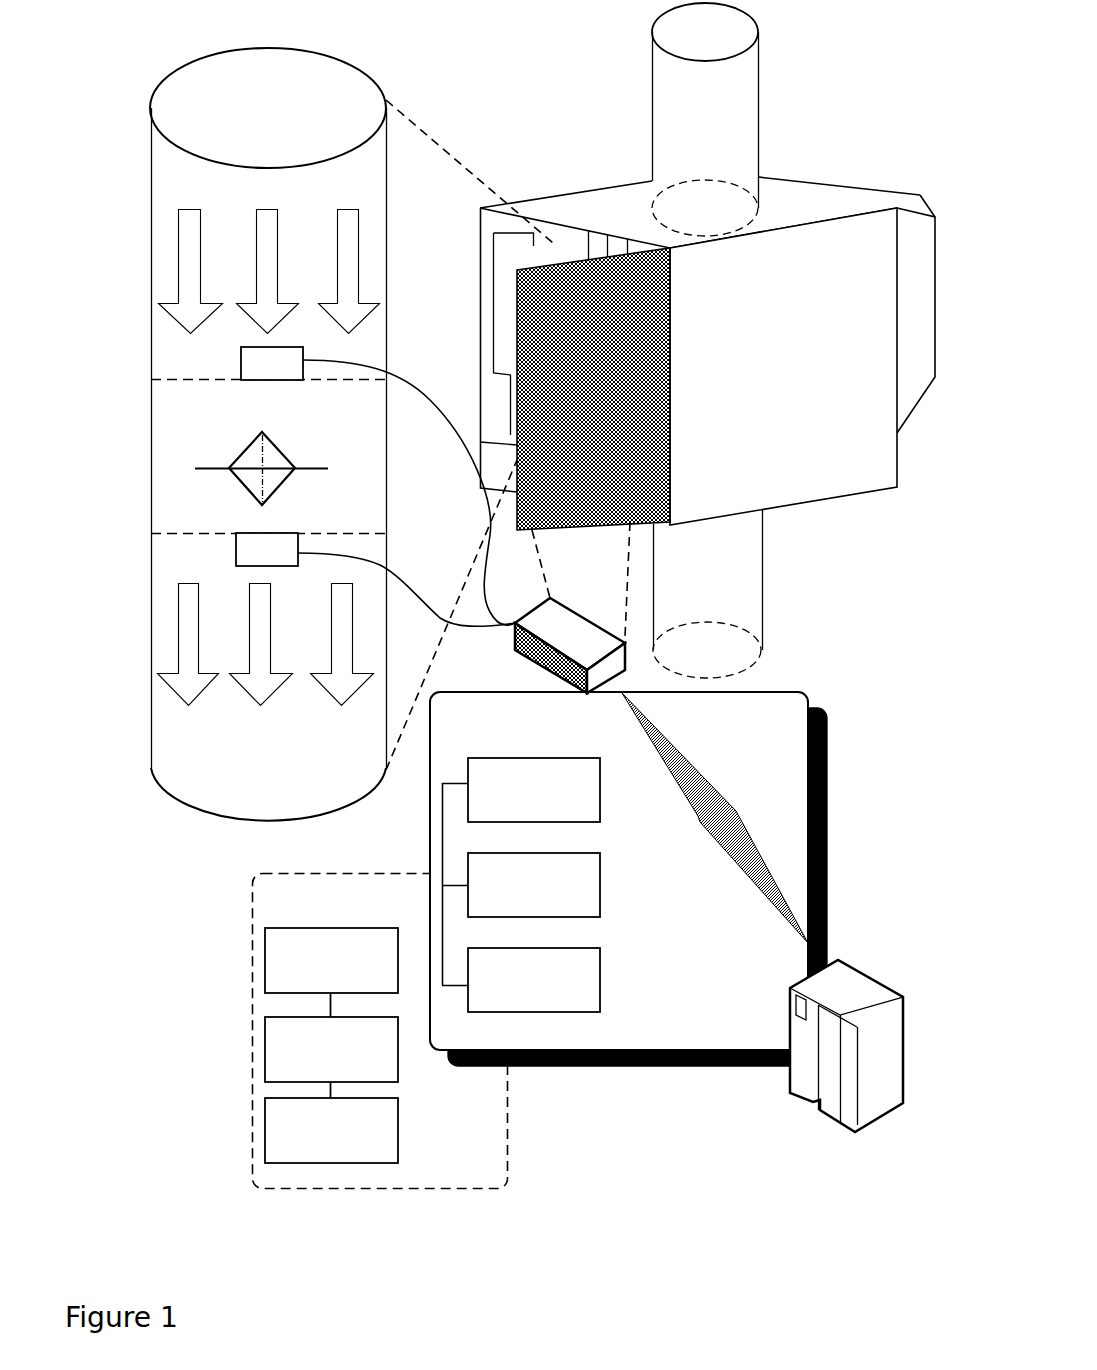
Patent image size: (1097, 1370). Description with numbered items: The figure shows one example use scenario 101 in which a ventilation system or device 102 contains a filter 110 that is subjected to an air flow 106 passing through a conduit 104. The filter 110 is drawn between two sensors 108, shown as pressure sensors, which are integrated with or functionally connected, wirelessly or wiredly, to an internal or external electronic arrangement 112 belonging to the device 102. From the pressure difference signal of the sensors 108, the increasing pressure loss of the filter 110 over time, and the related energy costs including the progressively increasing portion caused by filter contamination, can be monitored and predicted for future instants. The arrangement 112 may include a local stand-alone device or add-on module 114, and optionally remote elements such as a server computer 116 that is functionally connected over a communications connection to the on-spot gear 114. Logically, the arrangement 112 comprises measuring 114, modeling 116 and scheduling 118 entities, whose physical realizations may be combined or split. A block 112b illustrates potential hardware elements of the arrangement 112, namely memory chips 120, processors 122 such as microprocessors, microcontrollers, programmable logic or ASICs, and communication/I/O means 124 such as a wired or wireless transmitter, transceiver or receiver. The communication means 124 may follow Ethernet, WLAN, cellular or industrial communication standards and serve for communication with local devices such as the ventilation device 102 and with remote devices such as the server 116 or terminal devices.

The use scenario 101 is at (166, 24).
The ventilation system or device 102 is at (799, 372).
The conduit 104 is at (162, 176).
The air flow 106 is at (162, 300).
The sensors 108 is at (241, 358).
The filter 110 is at (162, 505).
The electronic arrangement 112 is at (628, 879).
The block of hardware elements 112b is at (380, 1031).
The local stand-alone device or add-on module / measuring entity 114 is at (665, 848).
The server computer / modeling entity 116 is at (602, 893).
The scheduling entity 118 is at (602, 988).
The memory chips 120 is at (265, 960).
The processors 122 is at (265, 1048).
The communication/I/O means 124 is at (265, 1130).